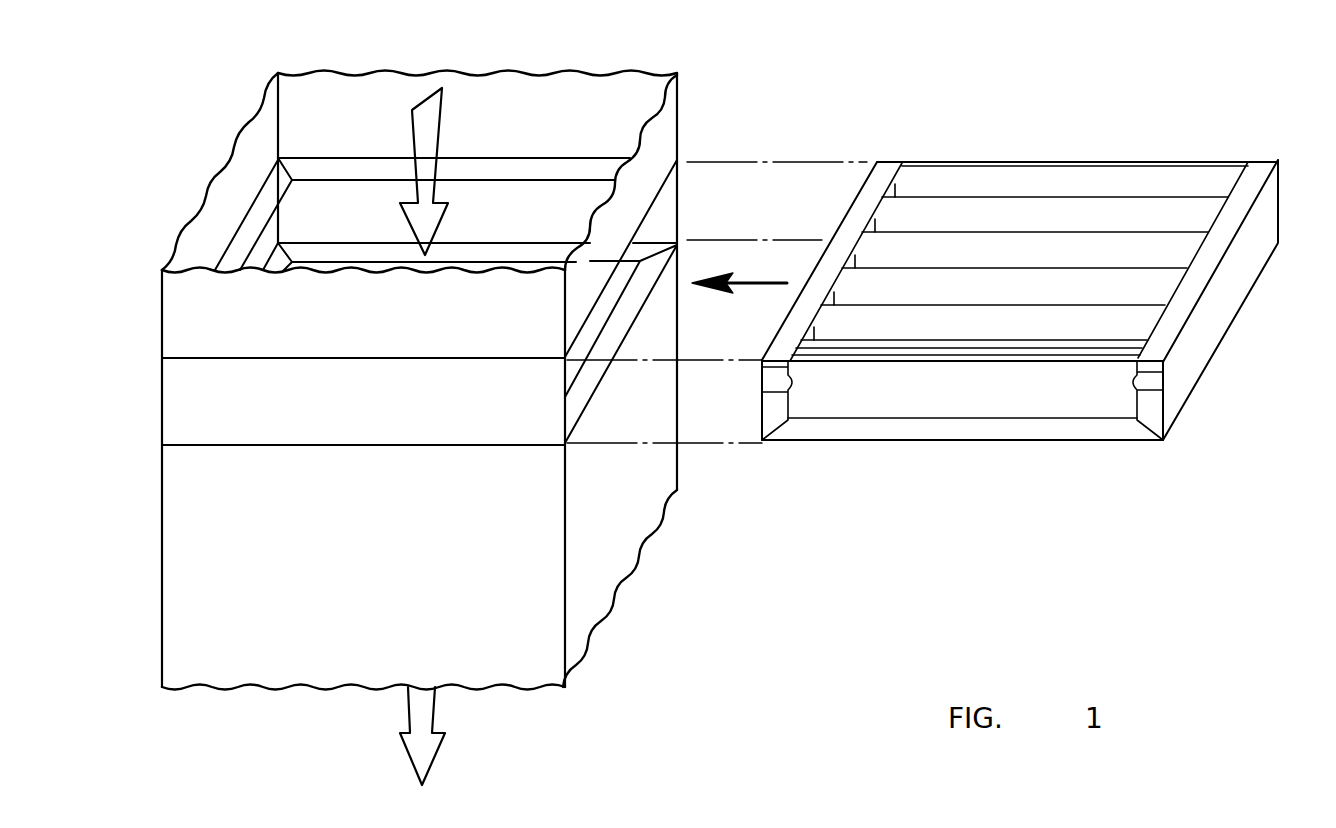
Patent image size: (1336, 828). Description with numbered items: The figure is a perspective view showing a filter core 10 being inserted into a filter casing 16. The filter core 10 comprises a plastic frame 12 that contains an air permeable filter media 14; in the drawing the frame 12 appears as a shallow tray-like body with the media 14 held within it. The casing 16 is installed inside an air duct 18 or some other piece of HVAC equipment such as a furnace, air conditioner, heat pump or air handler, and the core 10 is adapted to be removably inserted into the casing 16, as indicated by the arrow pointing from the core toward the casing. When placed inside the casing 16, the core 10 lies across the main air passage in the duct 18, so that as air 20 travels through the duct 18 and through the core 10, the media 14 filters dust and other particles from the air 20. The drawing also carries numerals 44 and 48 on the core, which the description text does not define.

The filter core 10 is at (1203, 148).
The plastic frame 12 is at (902, 443).
The air permeable filter media 14 is at (1028, 195).
The filter casing 16 is at (172, 378).
The air duct 18 is at (160, 512).
The air 20 is at (440, 115).
The front wall 44 is at (1048, 402).
The rim 48 is at (955, 162).